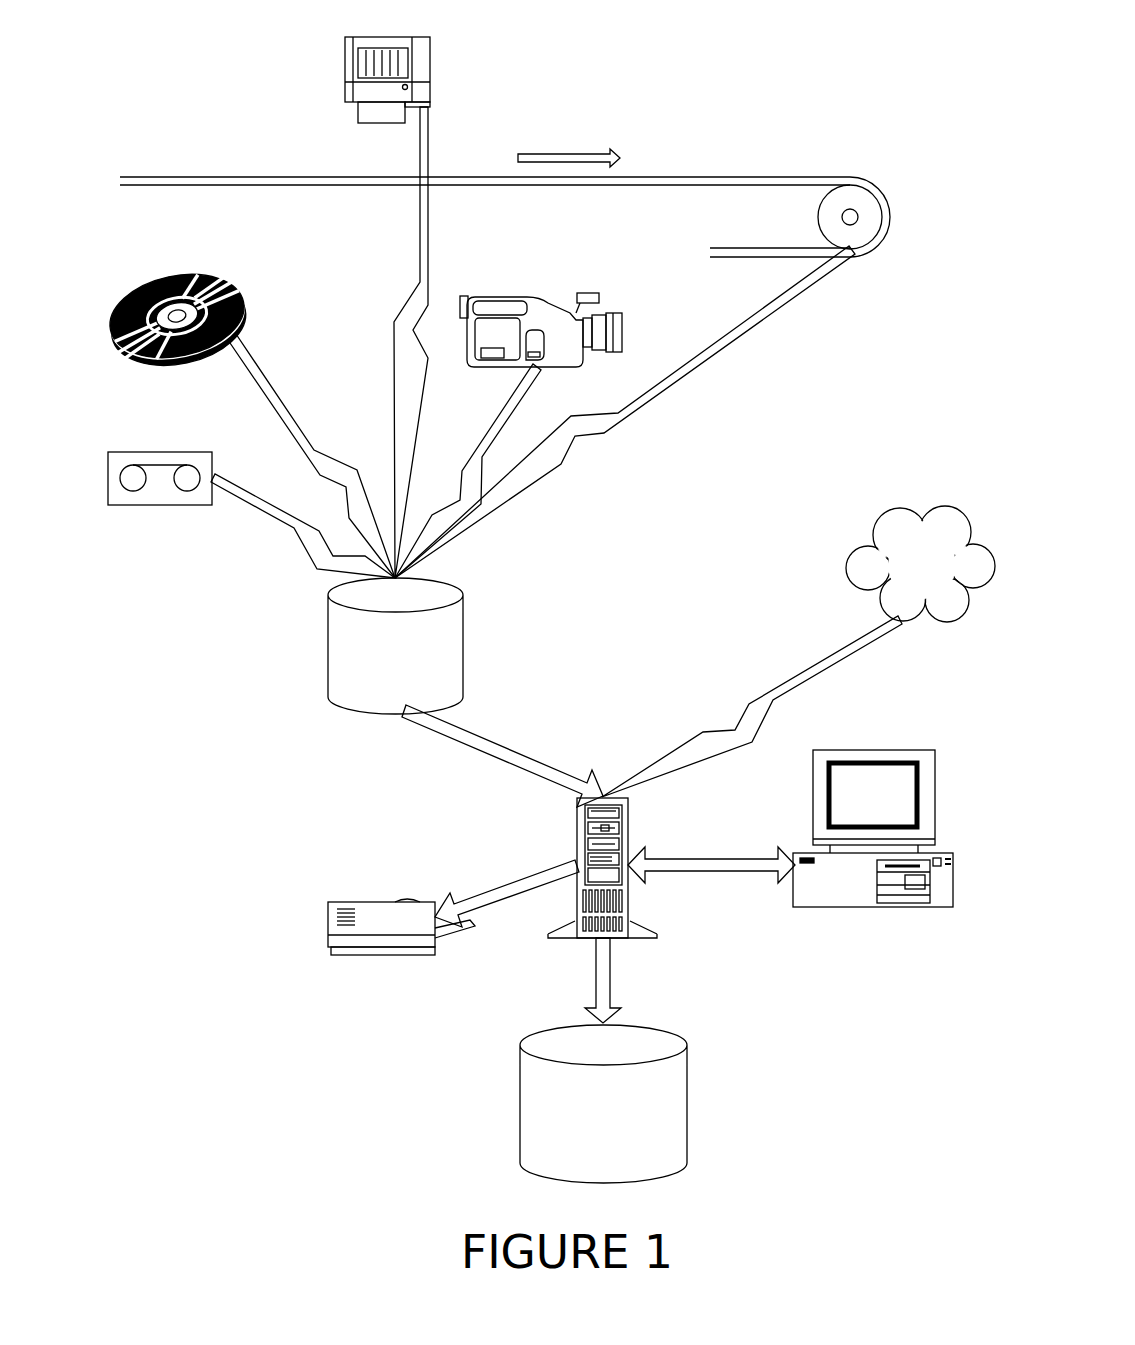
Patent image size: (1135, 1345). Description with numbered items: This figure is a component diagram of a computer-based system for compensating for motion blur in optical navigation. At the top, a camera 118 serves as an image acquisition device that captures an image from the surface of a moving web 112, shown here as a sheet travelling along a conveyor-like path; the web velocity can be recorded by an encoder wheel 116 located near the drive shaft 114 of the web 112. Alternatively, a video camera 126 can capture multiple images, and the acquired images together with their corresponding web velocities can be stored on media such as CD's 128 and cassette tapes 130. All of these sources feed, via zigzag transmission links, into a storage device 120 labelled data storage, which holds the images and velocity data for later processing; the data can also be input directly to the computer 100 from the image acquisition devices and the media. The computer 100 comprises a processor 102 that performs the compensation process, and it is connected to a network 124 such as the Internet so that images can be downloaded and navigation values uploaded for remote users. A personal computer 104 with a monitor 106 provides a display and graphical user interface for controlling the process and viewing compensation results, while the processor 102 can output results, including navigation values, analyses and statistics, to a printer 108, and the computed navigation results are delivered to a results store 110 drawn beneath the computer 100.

The computer 100 is at (627, 838).
The processor 102 is at (630, 890).
The personal computer 104 is at (893, 750).
The monitor 106 is at (902, 798).
The printer 108 is at (400, 902).
The navigation results storage 110 is at (627, 1023).
The moving web 112 is at (680, 174).
The drive shaft 114 is at (848, 200).
The encoder wheel 116 is at (853, 250).
The camera 118 is at (430, 50).
The storage device 120 is at (330, 607).
The network 124 is at (902, 512).
The video camera 126 is at (517, 296).
The CD 128 is at (192, 277).
The cassette tape 130 is at (165, 451).